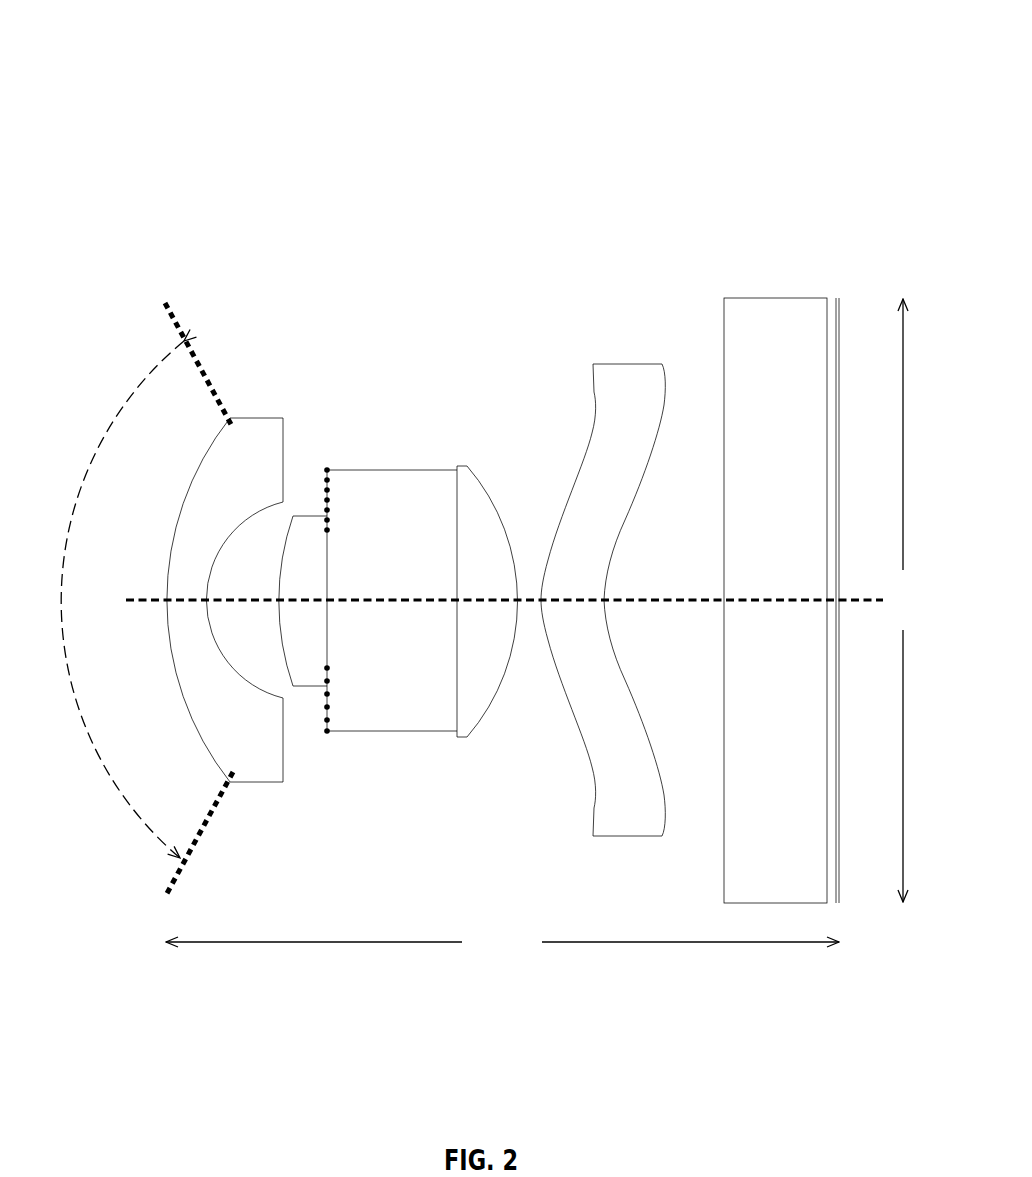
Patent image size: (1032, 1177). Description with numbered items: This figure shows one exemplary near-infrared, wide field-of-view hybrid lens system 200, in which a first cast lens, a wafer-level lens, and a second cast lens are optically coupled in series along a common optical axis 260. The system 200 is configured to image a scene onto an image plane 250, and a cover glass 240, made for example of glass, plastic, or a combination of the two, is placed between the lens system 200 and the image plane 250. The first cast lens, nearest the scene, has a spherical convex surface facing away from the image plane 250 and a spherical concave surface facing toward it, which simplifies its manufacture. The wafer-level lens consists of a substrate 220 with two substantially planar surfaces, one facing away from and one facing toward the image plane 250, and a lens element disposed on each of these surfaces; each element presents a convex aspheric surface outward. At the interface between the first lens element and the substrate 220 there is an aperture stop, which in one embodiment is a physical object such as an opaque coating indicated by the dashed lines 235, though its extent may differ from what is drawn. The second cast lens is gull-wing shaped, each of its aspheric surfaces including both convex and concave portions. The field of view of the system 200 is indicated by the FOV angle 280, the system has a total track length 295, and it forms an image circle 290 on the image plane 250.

The near-infrared, wide FOV hybrid lens system 200 is at (303, 100).
The substrate 220 is at (392, 607).
The dashed lines 235 is at (332, 493).
The cover glass 240 is at (789, 298).
The image plane 250 is at (838, 333).
The optical axis 260 is at (663, 600).
The FOV angle 280 is at (88, 476).
The image circle 290 is at (902, 600).
The total track length 295 is at (502, 941).